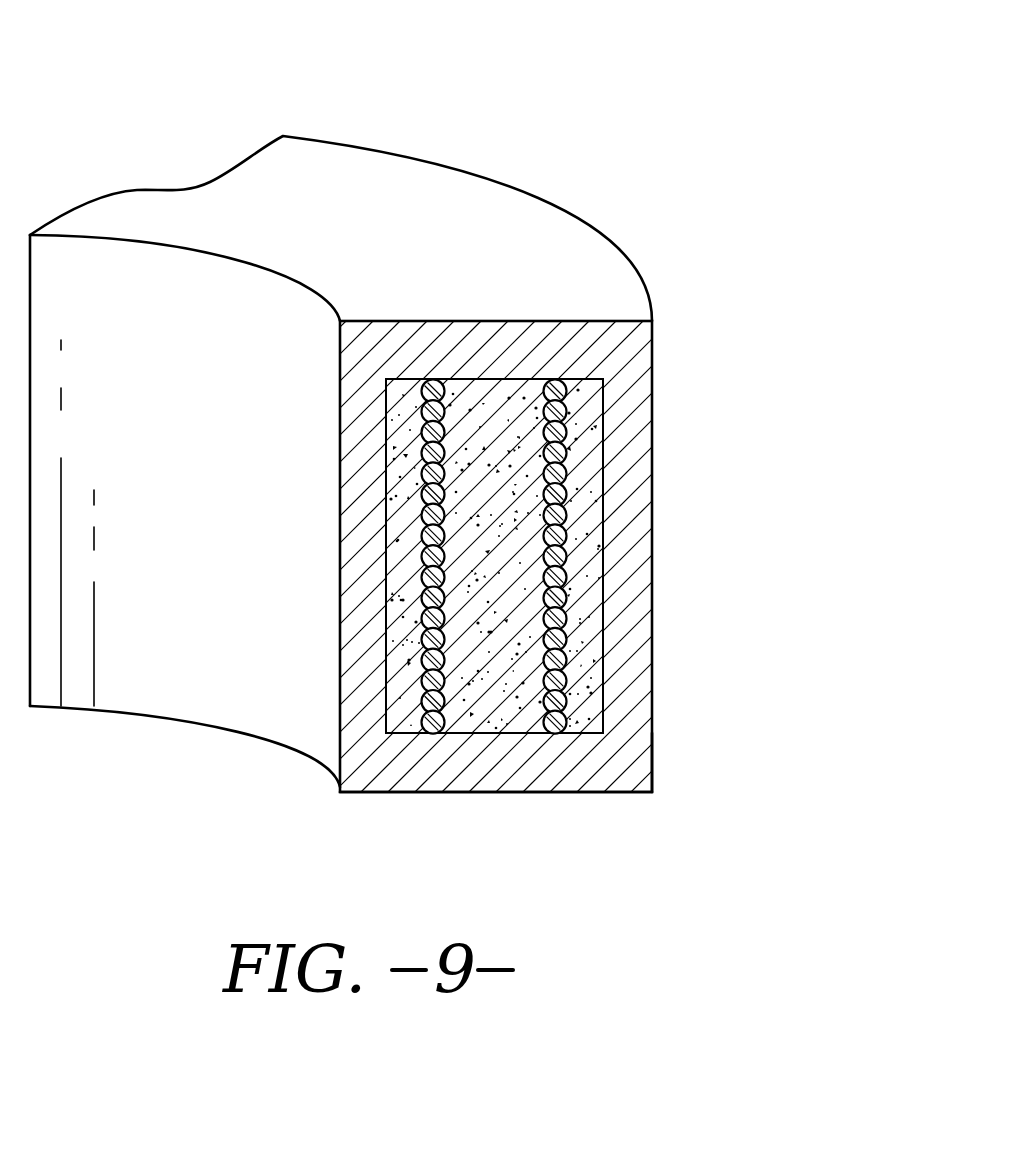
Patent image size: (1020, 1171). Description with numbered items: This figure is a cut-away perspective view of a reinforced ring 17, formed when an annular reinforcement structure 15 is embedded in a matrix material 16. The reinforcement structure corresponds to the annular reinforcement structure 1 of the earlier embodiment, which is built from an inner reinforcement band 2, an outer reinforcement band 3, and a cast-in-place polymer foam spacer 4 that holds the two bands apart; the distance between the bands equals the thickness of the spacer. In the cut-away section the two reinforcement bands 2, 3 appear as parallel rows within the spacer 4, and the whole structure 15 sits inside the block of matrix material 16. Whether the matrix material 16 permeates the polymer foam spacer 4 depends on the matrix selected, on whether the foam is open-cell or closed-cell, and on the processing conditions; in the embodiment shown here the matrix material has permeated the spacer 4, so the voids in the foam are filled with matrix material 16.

The reinforced ring 17 is at (341, 394).
The annular reinforcement structure 1 is at (617, 563).
The inner reinforcement band 2 is at (418, 679).
The outer reinforcement band 3 is at (557, 437).
The polymer foam spacer 4 is at (513, 407).
The annular reinforcement structure 15 is at (608, 671).
The matrix material 16 is at (627, 732).